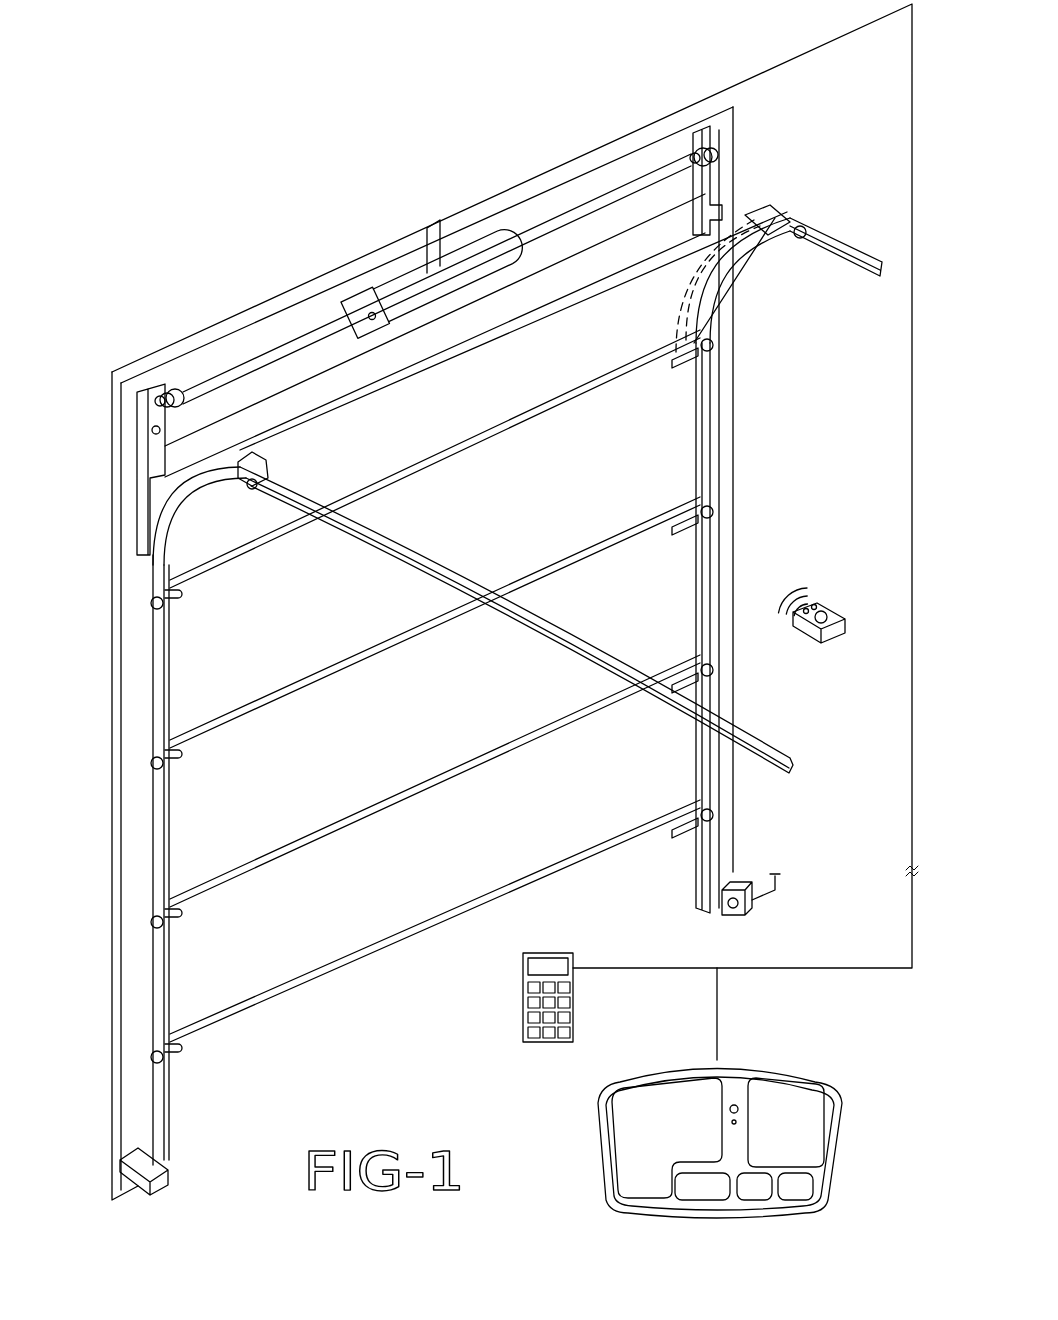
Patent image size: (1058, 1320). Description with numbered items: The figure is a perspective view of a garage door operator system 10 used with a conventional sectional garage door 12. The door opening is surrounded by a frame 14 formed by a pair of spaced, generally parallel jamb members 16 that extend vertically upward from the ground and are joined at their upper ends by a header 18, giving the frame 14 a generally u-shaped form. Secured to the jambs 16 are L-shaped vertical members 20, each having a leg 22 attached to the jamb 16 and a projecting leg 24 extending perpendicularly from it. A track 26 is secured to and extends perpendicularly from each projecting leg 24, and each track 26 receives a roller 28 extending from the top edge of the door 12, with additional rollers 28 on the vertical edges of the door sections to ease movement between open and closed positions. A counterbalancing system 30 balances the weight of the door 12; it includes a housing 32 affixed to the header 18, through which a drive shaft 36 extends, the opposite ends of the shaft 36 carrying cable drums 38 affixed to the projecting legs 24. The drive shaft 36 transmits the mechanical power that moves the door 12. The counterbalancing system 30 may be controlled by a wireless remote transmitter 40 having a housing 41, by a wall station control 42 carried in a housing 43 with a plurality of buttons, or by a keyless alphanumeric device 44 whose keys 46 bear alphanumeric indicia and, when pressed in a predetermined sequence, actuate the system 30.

The garage door operator system 10 is at (292, 148).
The sectional garage door 12 is at (655, 480).
The frame 14 is at (243, 316).
The jamb members 16 is at (132, 1018).
The header 18 is at (205, 353).
The L-shaped vertical members 20 is at (142, 440).
The leg 22 is at (137, 405).
The projecting leg 24 is at (155, 463).
The track 26 is at (500, 622).
The roller 28 is at (802, 240).
The counterbalancing system 30 is at (382, 258).
The housing 32 is at (462, 252).
The drive shaft 36 is at (313, 328).
The cable drums 38 is at (166, 390).
The wireless remote transmitter 40 is at (836, 610).
The housing 41 is at (832, 637).
The wall station control 42 is at (785, 1040).
The housing 43 is at (812, 1172).
The keyless alphanumeric device 44 is at (523, 1003).
The keys 46 is at (565, 1000).